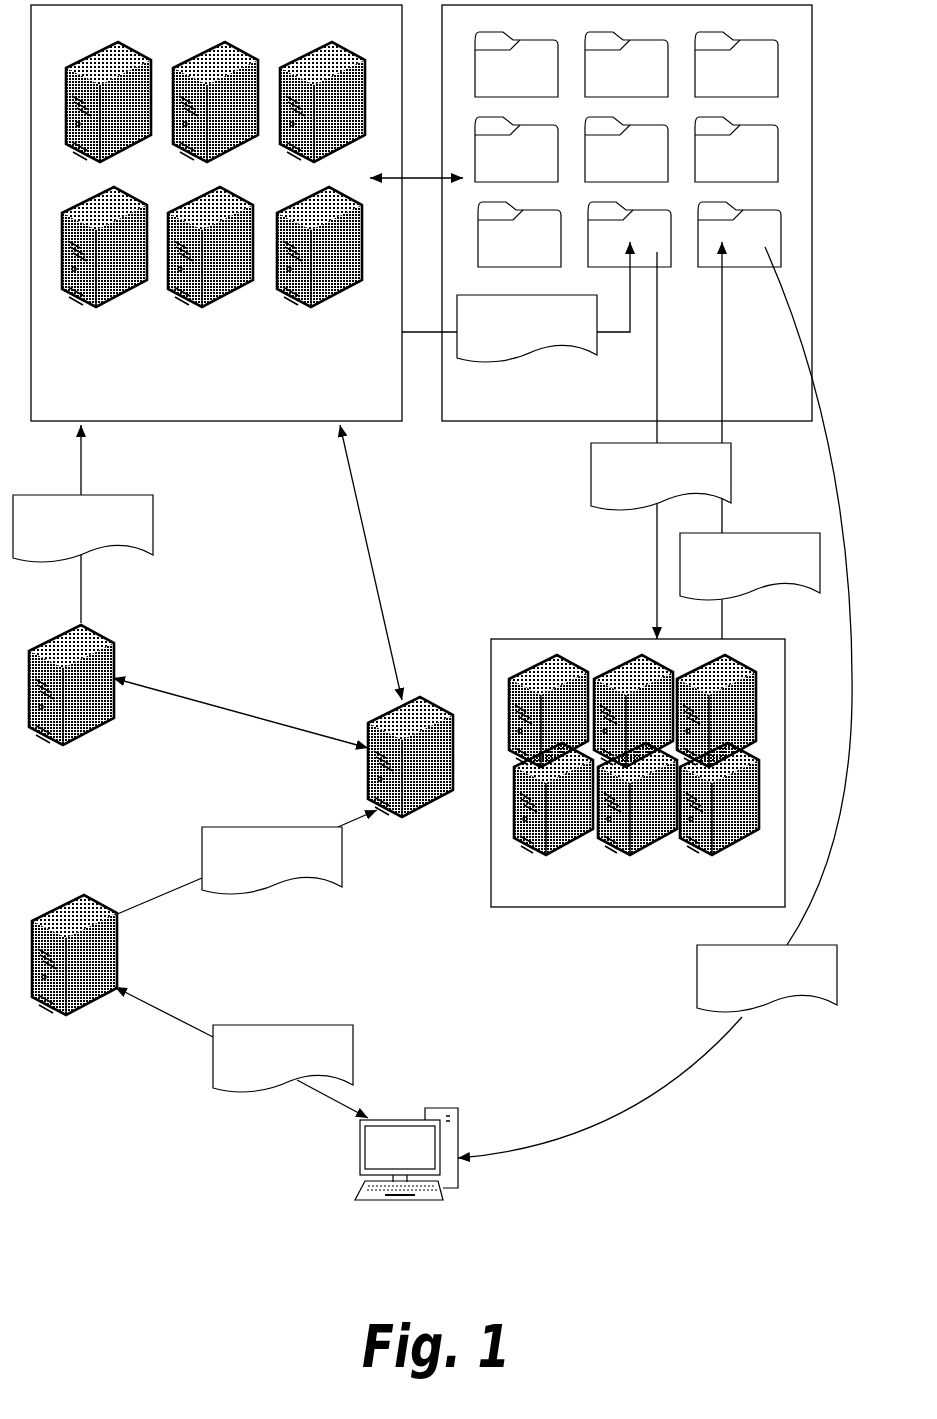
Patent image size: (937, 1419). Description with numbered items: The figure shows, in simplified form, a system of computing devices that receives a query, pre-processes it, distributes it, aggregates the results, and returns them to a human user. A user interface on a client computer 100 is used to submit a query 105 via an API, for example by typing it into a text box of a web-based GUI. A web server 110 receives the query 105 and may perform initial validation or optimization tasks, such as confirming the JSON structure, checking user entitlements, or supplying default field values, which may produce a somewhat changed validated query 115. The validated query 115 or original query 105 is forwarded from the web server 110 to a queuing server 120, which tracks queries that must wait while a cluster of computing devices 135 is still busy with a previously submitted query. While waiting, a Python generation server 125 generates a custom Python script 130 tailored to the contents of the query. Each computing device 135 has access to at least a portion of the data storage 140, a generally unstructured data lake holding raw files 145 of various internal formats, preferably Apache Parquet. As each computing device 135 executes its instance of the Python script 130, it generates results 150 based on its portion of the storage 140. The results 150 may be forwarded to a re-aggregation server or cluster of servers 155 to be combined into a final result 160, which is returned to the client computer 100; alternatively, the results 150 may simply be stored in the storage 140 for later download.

The client computer 100 is at (460, 1160).
The query 105 is at (264, 1064).
The web server 110 is at (98, 998).
The validated query 115 is at (253, 865).
The queuing server 120 is at (387, 717).
The Python generation server 125 is at (98, 730).
The Python script 130 is at (63, 535).
The cluster of computing devices 135 is at (202, 303).
The data storage 140 is at (627, 213).
The raw files 145 is at (498, 82).
The results 150 is at (509, 337).
The re-aggregation server or cluster of servers 155 is at (689, 894).
The final result 160 is at (732, 572).